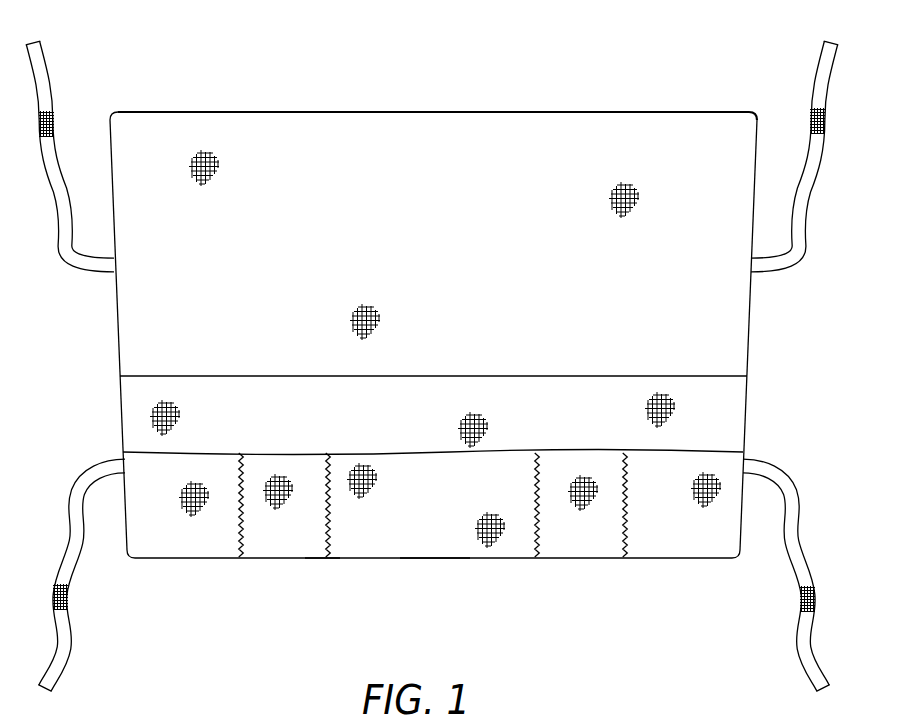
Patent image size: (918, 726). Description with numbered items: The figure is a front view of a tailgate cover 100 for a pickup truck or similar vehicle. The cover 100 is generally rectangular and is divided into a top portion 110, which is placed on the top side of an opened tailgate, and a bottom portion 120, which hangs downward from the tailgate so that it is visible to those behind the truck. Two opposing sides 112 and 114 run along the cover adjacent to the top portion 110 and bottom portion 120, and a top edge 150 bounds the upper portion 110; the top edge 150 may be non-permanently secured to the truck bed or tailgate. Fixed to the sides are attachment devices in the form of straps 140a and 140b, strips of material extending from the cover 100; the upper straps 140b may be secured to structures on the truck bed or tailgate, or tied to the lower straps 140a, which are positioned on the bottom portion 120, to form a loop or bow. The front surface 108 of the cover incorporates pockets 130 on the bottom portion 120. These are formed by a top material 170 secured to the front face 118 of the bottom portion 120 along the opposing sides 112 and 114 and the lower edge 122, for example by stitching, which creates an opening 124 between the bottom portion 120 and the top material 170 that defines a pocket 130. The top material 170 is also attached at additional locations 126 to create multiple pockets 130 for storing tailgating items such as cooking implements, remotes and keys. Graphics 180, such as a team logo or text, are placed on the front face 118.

The tailgate cover 100 is at (102, 55).
The front surface 108 is at (463, 336).
The top portion 110 is at (357, 194).
The opposing side 112 is at (154, 274).
The opposing side 114 is at (736, 271).
The front face 118 is at (198, 563).
The bottom portion 120 is at (260, 402).
The lower edge 122 is at (432, 565).
The opening 124 is at (402, 447).
The additional locations 126 is at (327, 462).
The pocket 130 is at (163, 507).
The straps 140a is at (67, 478).
The straps 140b is at (54, 249).
The top edge 150 is at (479, 103).
The top material 170 is at (320, 564).
The graphics 180 is at (443, 530).